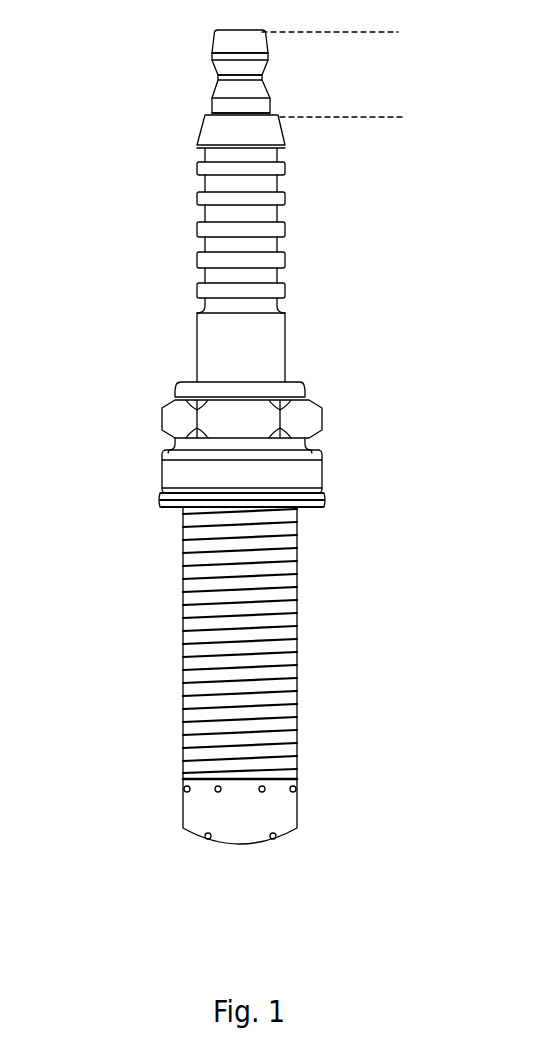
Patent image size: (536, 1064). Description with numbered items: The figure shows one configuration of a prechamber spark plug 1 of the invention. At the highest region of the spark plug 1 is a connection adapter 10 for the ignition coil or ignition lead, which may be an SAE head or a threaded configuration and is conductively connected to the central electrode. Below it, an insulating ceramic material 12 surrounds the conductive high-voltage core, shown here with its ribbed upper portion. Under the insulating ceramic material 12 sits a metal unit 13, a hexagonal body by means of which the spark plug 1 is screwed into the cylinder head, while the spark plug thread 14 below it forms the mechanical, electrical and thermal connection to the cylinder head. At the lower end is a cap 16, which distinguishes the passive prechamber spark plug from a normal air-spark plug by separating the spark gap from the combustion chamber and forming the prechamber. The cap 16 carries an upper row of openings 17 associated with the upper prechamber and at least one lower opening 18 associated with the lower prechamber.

The spark plug 1 is at (152, 82).
The connection adapter 10 is at (302, 93).
The insulating ceramic material 12 is at (315, 280).
The metal unit 13 is at (337, 463).
The spark plug thread 14 is at (285, 677).
The cap 16 is at (172, 810).
The upper row of openings 17 is at (267, 793).
The lower row of openings 18 is at (275, 840).